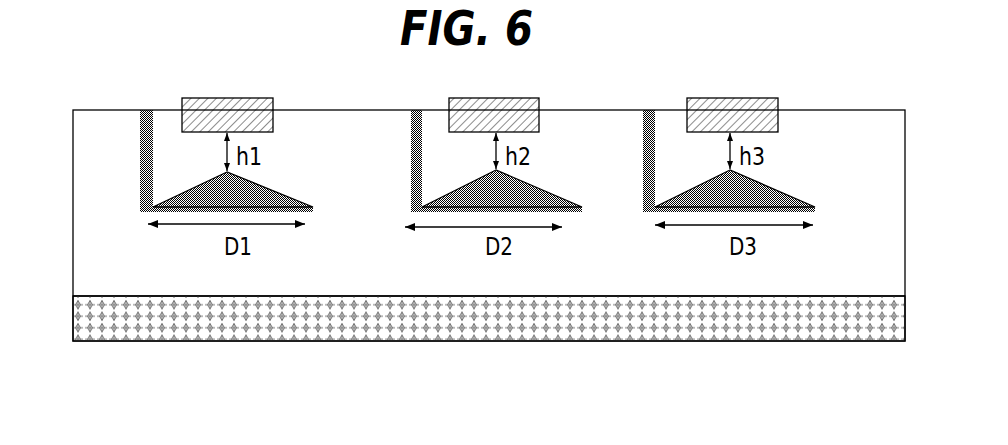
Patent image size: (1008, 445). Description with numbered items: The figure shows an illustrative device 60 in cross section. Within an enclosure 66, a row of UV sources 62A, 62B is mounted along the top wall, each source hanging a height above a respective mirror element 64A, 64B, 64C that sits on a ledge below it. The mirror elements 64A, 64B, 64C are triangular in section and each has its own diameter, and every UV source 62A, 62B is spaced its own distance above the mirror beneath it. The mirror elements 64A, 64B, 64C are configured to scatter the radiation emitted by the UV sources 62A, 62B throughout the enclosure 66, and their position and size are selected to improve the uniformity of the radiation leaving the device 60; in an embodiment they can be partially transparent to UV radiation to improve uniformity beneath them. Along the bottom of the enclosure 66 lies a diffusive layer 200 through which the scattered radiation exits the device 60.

The device 60 is at (104, 94).
The enclosure 66 is at (73, 163).
The UV source 62A is at (248, 128).
The UV source 62B is at (515, 128).
The mirror element 64A is at (247, 203).
The mirror element 64B is at (516, 203).
The mirror element 64C is at (750, 203).
The diffusive layer 200 is at (616, 330).